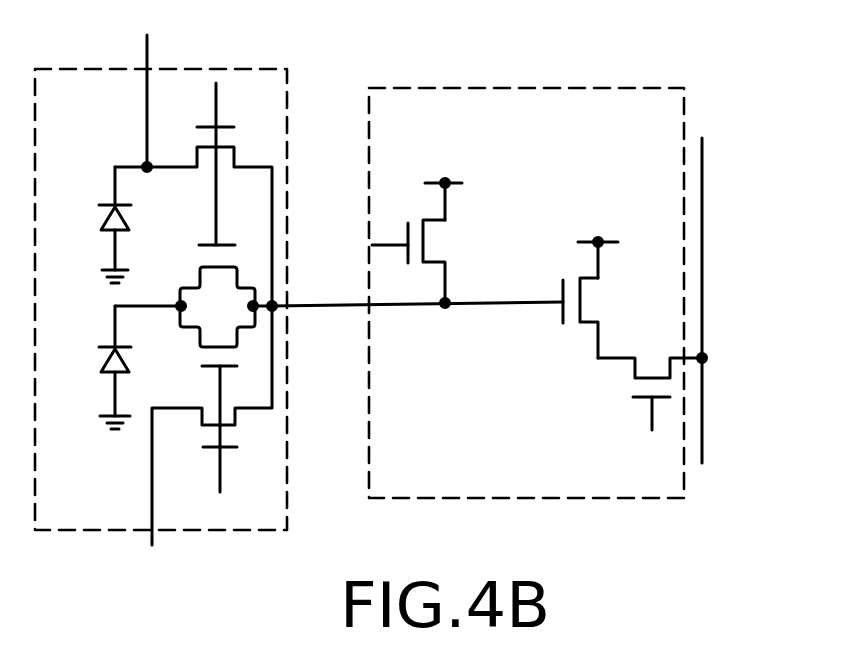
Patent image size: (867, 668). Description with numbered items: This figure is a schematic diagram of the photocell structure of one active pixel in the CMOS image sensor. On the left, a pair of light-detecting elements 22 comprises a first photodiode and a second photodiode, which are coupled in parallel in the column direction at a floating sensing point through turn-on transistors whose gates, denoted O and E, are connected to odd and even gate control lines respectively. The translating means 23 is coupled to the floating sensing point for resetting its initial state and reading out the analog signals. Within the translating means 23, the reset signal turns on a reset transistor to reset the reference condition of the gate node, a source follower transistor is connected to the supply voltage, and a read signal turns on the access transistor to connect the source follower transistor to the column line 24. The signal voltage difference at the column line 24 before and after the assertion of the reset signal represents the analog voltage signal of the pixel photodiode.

The light-detecting elements 22 is at (260, 67).
The translating means 23 is at (577, 87).
The column line 24 is at (702, 332).